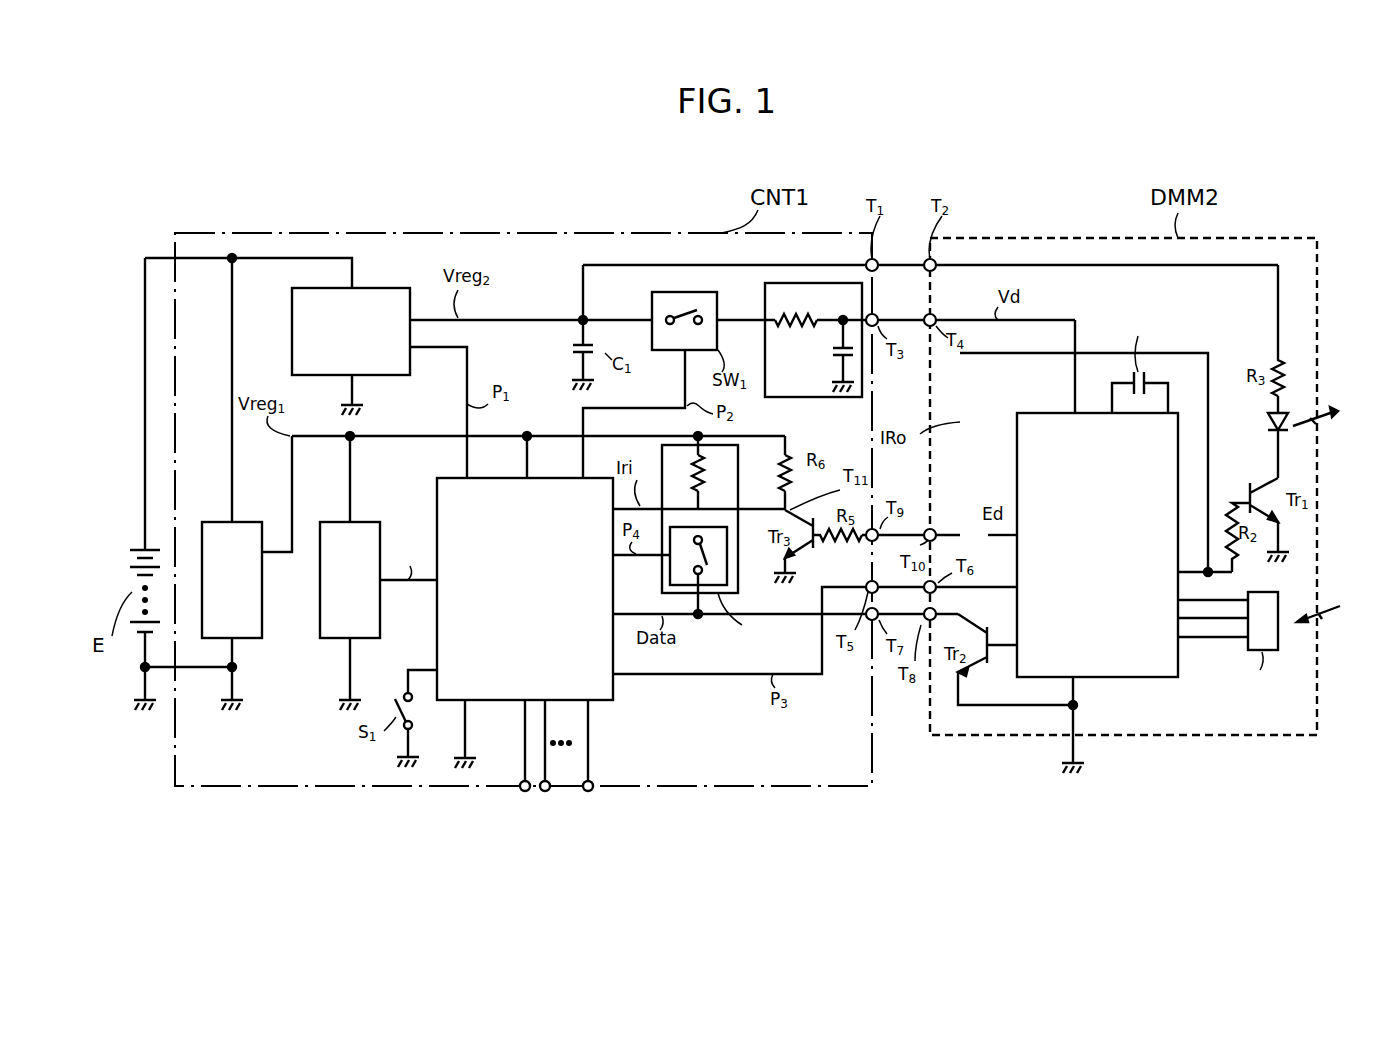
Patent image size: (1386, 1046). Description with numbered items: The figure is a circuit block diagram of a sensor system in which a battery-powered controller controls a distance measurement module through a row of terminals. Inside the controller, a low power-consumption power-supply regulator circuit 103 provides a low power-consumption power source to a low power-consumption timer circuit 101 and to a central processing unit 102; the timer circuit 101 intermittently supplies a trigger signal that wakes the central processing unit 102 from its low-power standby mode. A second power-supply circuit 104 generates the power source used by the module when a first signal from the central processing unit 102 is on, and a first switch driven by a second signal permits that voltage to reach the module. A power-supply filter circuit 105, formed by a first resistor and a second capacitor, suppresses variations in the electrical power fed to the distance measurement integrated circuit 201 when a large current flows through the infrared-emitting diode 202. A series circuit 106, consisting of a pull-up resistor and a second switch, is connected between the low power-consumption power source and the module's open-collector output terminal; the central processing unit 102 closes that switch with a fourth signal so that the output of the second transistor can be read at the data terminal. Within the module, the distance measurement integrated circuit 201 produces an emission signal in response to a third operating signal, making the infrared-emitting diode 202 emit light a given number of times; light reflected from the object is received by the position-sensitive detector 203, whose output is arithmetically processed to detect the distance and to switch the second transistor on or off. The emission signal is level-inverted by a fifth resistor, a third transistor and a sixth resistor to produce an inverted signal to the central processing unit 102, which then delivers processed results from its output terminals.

The low power-consumption timer circuit (RTC) 101 is at (354, 522).
The CPU 102 is at (437, 478).
The low power-consumption power-supply regulator circuit (REG) 103 is at (262, 622).
The power-supply circuit (REG) 104 is at (381, 288).
The power-supply filter circuit 105 is at (800, 397).
The series circuit 106 is at (730, 548).
The distance measurement IC (DMIC) 201 is at (1050, 413).
The infrared-emitting diode (IRED) 202 is at (1286, 412).
The position-sensitive detector (PSD) 203 is at (1280, 636).